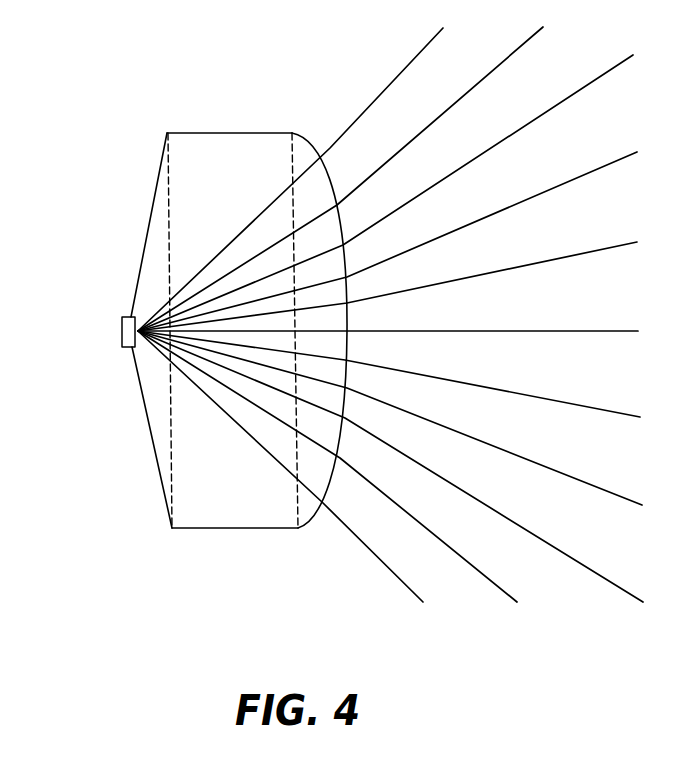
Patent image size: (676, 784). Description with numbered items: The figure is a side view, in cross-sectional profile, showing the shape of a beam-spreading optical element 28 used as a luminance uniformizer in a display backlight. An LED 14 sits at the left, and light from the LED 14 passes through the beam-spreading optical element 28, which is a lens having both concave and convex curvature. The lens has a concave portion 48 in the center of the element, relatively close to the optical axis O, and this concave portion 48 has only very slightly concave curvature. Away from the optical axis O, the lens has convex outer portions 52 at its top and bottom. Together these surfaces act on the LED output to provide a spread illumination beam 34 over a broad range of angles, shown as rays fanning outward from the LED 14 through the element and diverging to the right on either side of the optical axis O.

The LED 14 is at (122, 333).
The beam-spreading optical element 28 is at (205, 133).
The convex outer portions 52 is at (306, 140).
The concave portion 48 is at (353, 329).
The optical axis O is at (600, 331).
The spread illumination beam 34 is at (390, 572).